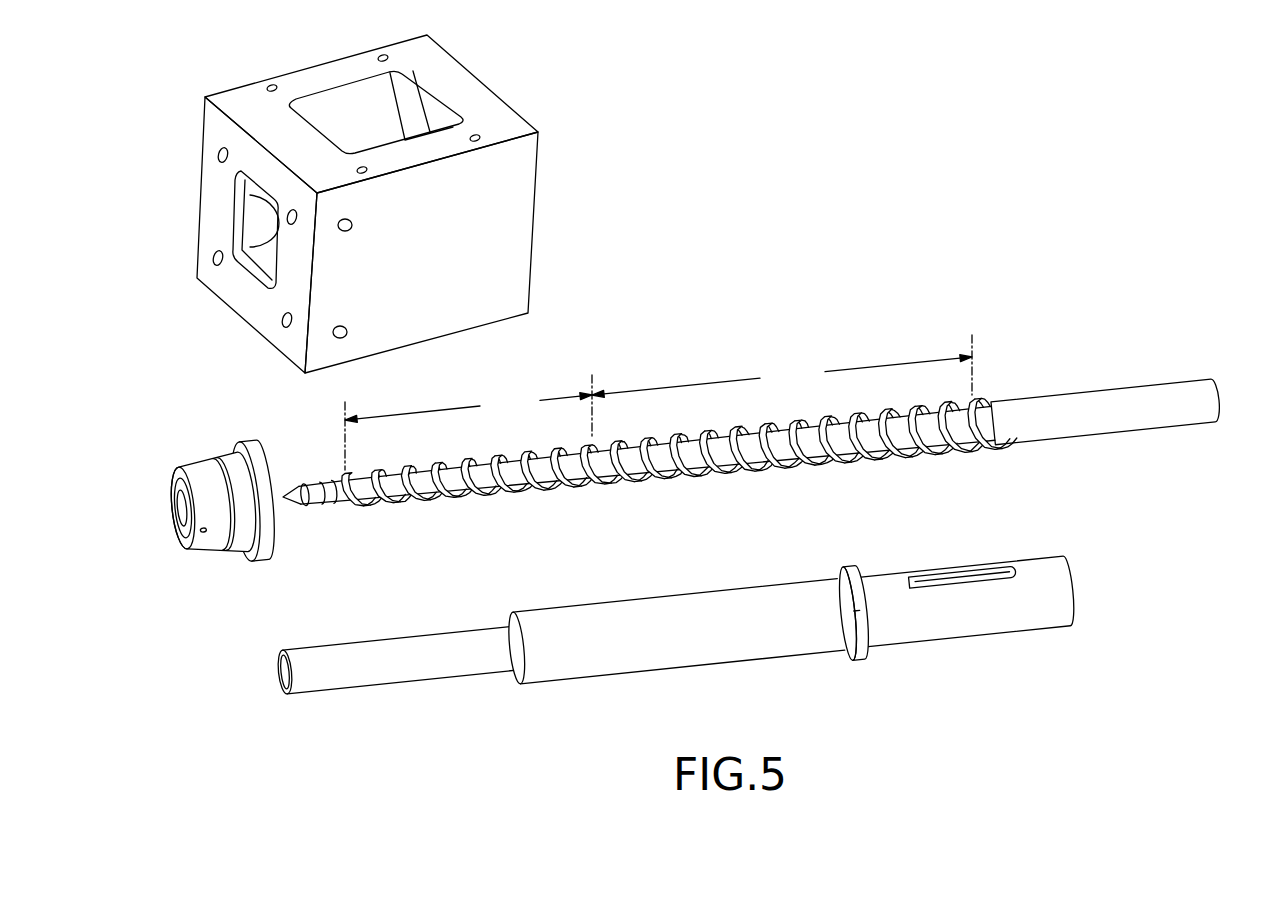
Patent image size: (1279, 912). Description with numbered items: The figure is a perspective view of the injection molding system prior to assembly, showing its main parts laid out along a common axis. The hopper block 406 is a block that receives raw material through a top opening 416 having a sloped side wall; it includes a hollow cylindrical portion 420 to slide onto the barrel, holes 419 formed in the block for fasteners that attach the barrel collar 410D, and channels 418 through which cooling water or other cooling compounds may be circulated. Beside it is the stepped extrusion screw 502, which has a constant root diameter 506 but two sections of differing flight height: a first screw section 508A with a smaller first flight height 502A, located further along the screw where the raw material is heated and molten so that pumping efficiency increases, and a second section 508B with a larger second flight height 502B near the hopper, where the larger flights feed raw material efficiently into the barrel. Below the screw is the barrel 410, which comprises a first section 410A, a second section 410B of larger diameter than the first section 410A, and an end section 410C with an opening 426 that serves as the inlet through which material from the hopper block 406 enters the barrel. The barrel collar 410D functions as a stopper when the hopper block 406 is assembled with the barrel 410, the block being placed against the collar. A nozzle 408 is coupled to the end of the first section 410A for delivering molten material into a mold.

The hopper block 406 is at (170, 73).
The top opening 416 is at (345, 100).
The channels 418 is at (350, 232).
The holes 419 is at (218, 156).
The hollow cylindrical portion 420 is at (258, 228).
The nozzle 408 is at (220, 460).
The stepped extrusion screw 502 is at (765, 428).
The first flight height 502A is at (458, 497).
The second flight height 502B is at (672, 408).
The root diameter 506 is at (492, 473).
The first screw section 508A is at (468, 422).
The second screw section 508B is at (782, 366).
The barrel 410 is at (674, 631).
The first section 410A is at (417, 667).
The second section 410B is at (577, 660).
The end section 410C is at (1057, 603).
The barrel collar 410D is at (853, 578).
The opening 426 is at (970, 572).